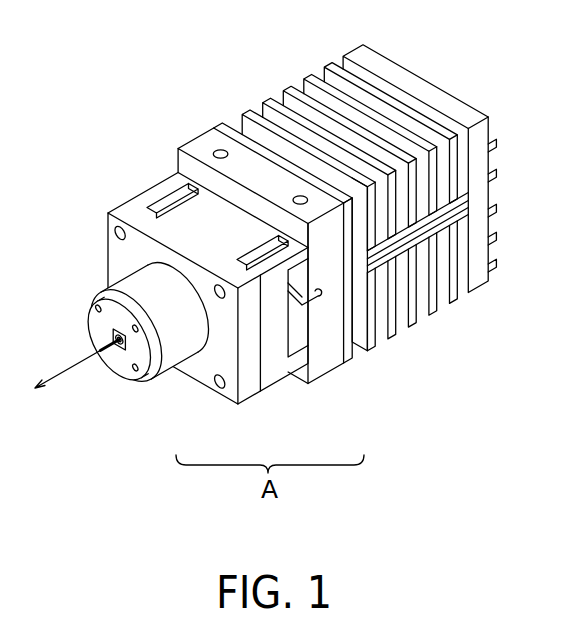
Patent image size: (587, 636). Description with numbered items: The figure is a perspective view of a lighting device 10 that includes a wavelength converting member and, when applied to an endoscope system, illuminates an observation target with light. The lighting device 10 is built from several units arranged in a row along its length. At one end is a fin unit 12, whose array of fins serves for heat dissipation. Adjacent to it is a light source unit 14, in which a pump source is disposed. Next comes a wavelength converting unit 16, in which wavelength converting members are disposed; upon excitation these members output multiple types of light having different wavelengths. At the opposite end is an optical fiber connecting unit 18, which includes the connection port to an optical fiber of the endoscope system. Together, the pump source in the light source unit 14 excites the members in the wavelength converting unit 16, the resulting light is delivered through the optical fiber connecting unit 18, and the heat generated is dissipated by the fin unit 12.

The lighting device 10 is at (265, 236).
The fin unit 12 is at (410, 353).
The light source unit 14 is at (328, 358).
The wavelength converting unit 16 is at (278, 362).
The optical fiber connecting unit 18 is at (173, 386).